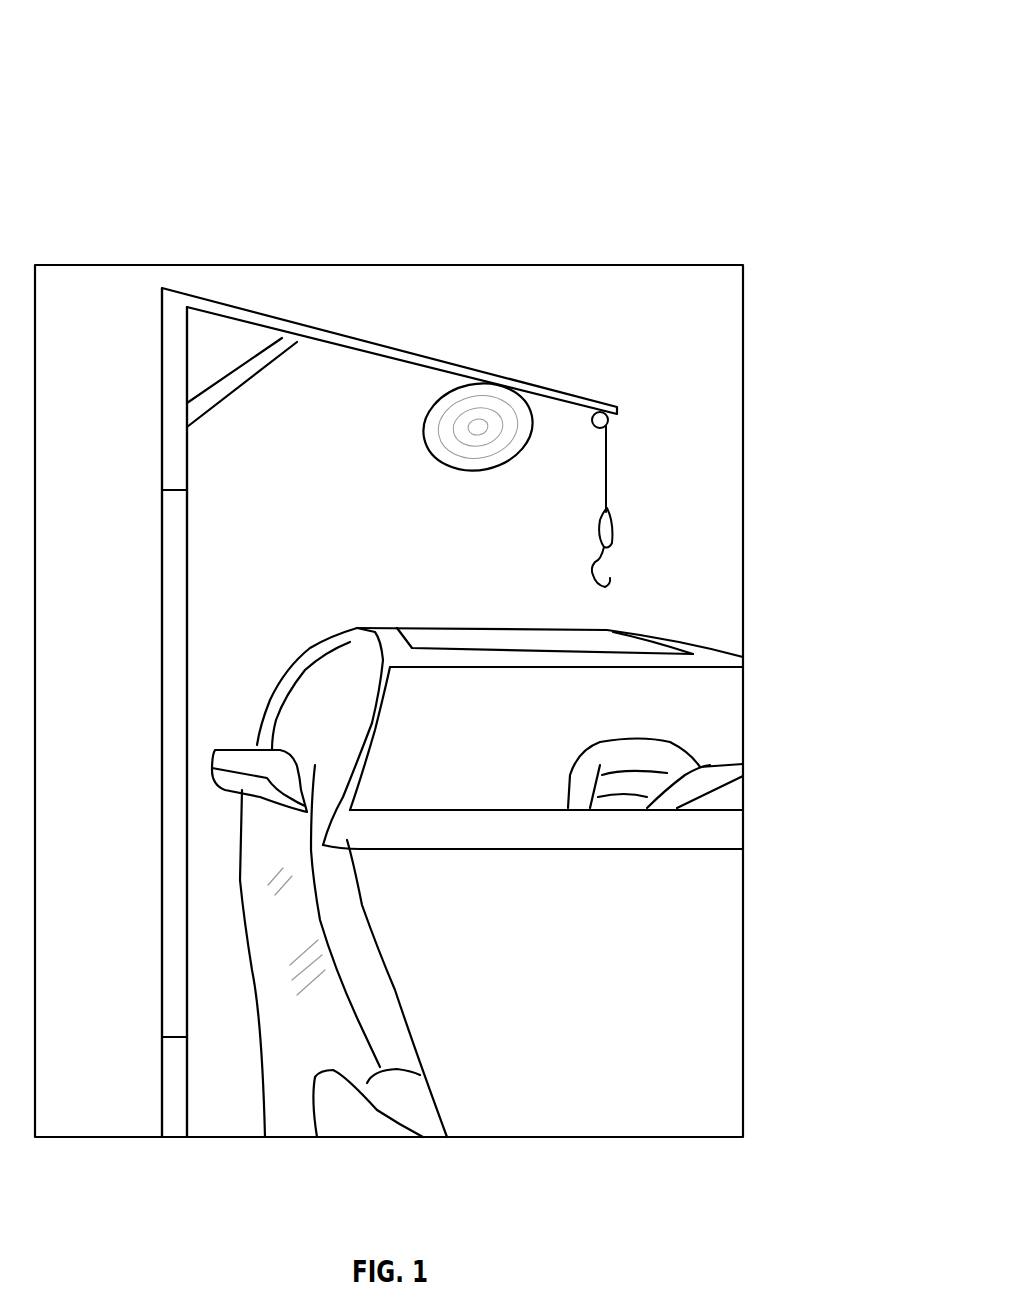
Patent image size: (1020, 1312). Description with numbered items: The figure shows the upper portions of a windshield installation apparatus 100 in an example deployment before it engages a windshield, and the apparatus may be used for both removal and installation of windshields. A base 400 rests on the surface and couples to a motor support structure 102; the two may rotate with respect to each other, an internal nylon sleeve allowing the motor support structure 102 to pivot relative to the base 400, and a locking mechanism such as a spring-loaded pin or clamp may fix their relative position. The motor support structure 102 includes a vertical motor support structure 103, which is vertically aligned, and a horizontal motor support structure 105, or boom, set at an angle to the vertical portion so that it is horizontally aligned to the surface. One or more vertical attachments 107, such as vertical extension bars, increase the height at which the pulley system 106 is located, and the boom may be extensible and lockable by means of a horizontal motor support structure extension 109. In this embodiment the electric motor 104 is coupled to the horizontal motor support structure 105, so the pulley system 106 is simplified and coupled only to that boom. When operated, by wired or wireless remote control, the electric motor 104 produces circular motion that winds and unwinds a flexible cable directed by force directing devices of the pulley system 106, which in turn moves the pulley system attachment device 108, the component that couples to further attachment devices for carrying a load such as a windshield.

The windshield installation apparatus 100 is at (782, 60).
The motor support structure 102 is at (168, 464).
The vertical motor support structure 103 is at (162, 808).
The electric motor 104 is at (427, 440).
The horizontal motor support structure 105 is at (375, 343).
The pulley system 106 is at (617, 420).
The vertical attachment 107 is at (162, 353).
The pulley system attachment device 108 is at (593, 565).
The horizontal motor support structure extension 109 is at (540, 387).
The base 400 is at (173, 1020).